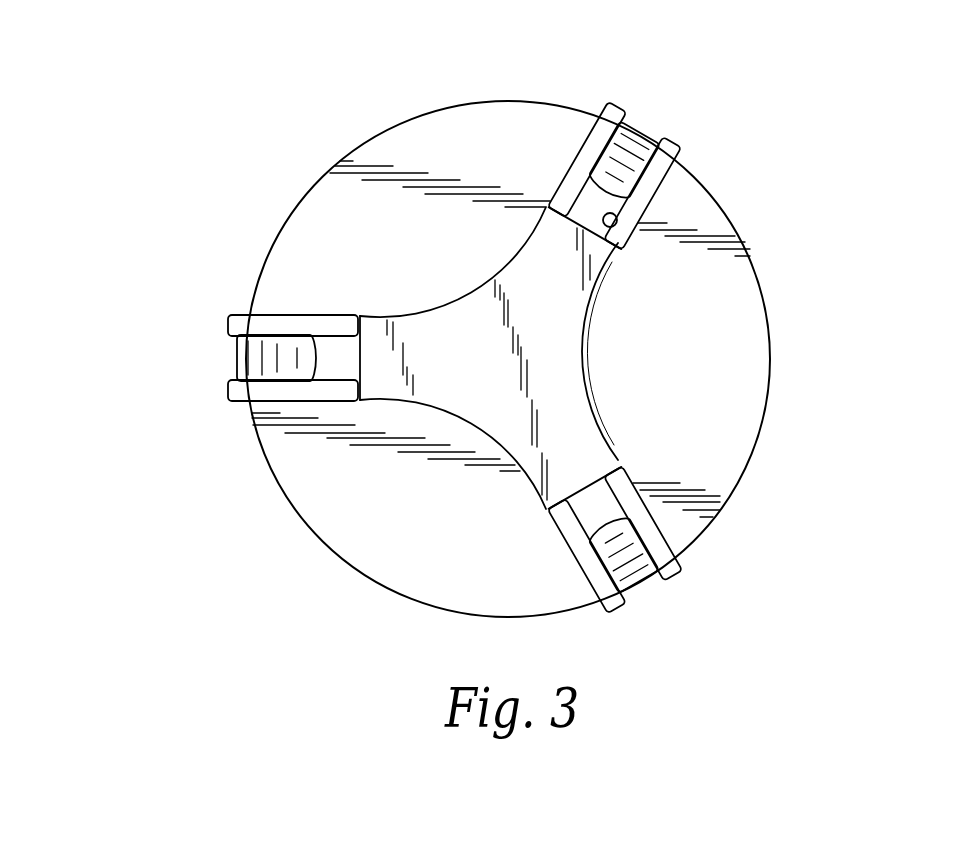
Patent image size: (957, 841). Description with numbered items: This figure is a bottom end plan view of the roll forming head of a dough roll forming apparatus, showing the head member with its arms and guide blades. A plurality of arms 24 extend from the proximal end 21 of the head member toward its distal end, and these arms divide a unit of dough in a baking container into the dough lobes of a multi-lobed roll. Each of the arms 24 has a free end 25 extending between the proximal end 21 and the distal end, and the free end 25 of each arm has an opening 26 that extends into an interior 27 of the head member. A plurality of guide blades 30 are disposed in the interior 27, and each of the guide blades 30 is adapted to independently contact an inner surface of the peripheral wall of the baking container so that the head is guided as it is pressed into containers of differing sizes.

The proximal end 21 is at (580, 452).
The arms 24 is at (560, 180).
The free end 25 is at (617, 103).
The opening 26 is at (664, 138).
The interior 27 is at (617, 224).
The guide blades 30 is at (238, 354).